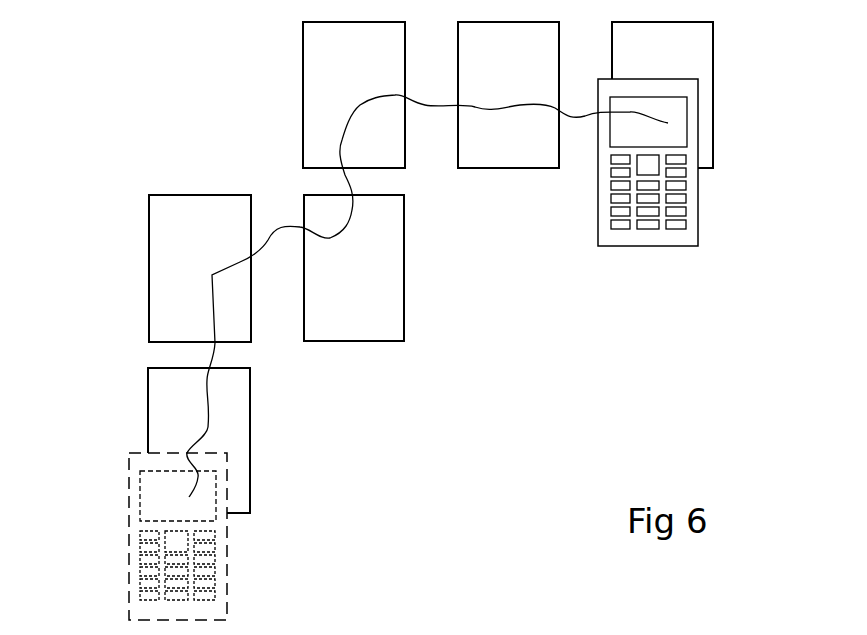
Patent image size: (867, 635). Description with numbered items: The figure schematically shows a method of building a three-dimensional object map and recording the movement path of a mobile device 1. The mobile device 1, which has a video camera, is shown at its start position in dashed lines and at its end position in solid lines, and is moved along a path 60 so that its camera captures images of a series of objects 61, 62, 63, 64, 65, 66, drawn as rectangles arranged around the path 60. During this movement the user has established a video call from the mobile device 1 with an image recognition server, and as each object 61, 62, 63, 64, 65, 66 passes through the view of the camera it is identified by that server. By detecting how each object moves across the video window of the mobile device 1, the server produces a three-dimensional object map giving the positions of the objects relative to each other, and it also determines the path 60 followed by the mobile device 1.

The mobile device 1 is at (698, 236).
The path 60 is at (343, 182).
The object 61 is at (149, 398).
The object 62 is at (149, 278).
The object 63 is at (404, 317).
The object 64 is at (303, 71).
The object 65 is at (458, 75).
The object 66 is at (713, 52).